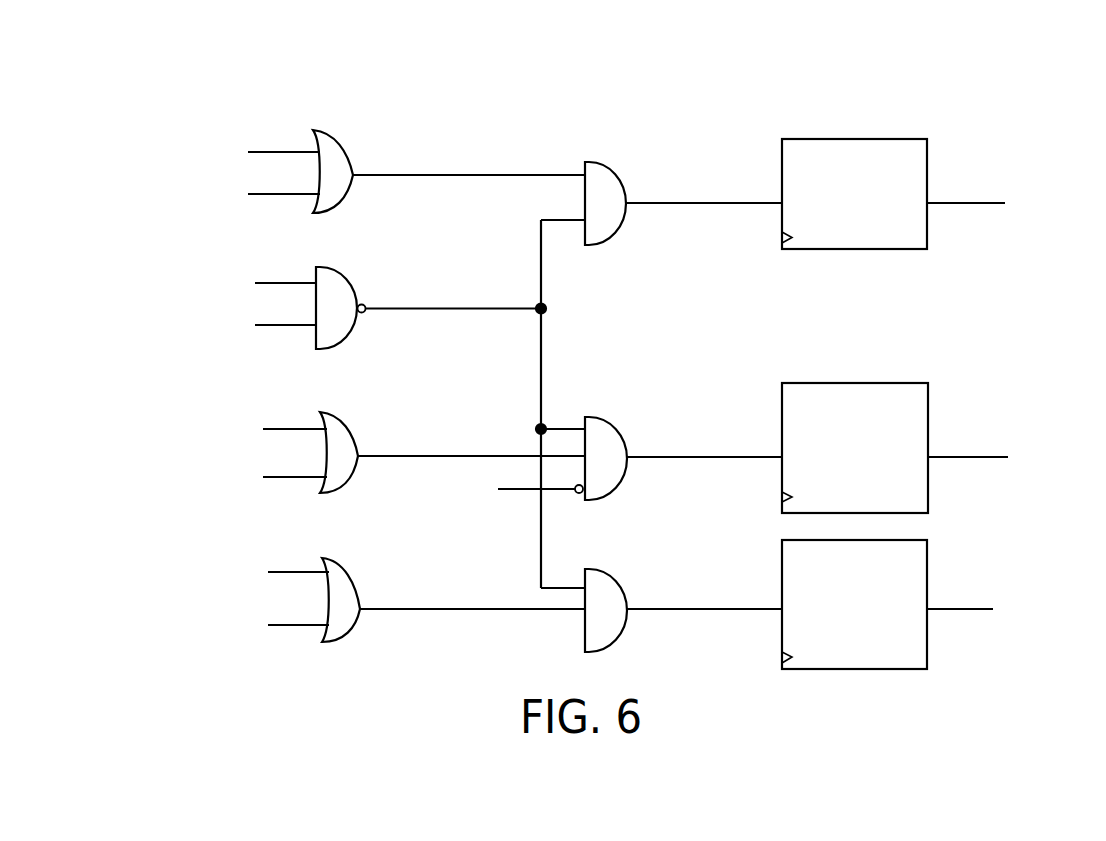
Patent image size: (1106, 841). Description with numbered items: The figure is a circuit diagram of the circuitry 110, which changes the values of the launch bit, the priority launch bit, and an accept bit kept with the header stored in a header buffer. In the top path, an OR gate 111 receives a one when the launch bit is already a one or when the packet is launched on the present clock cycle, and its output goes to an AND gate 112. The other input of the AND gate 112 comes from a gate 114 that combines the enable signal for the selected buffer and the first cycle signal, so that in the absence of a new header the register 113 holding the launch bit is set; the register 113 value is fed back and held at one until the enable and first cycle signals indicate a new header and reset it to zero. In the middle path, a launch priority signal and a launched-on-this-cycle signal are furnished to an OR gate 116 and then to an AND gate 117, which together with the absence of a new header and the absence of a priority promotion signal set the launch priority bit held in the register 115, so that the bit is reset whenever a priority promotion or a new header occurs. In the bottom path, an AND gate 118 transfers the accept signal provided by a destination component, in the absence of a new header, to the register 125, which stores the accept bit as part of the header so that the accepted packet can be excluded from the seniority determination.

The circuitry 110 is at (600, 68).
The OR gate 111 is at (331, 145).
The AND gate 112 is at (603, 182).
The register 113 is at (918, 194).
The NAND gate 114 is at (338, 288).
The LCH P register 115 is at (935, 448).
The OR gate 116 is at (338, 436).
The AND gate 117 is at (607, 440).
The AND gate 118 is at (607, 597).
The register 125 is at (941, 604).